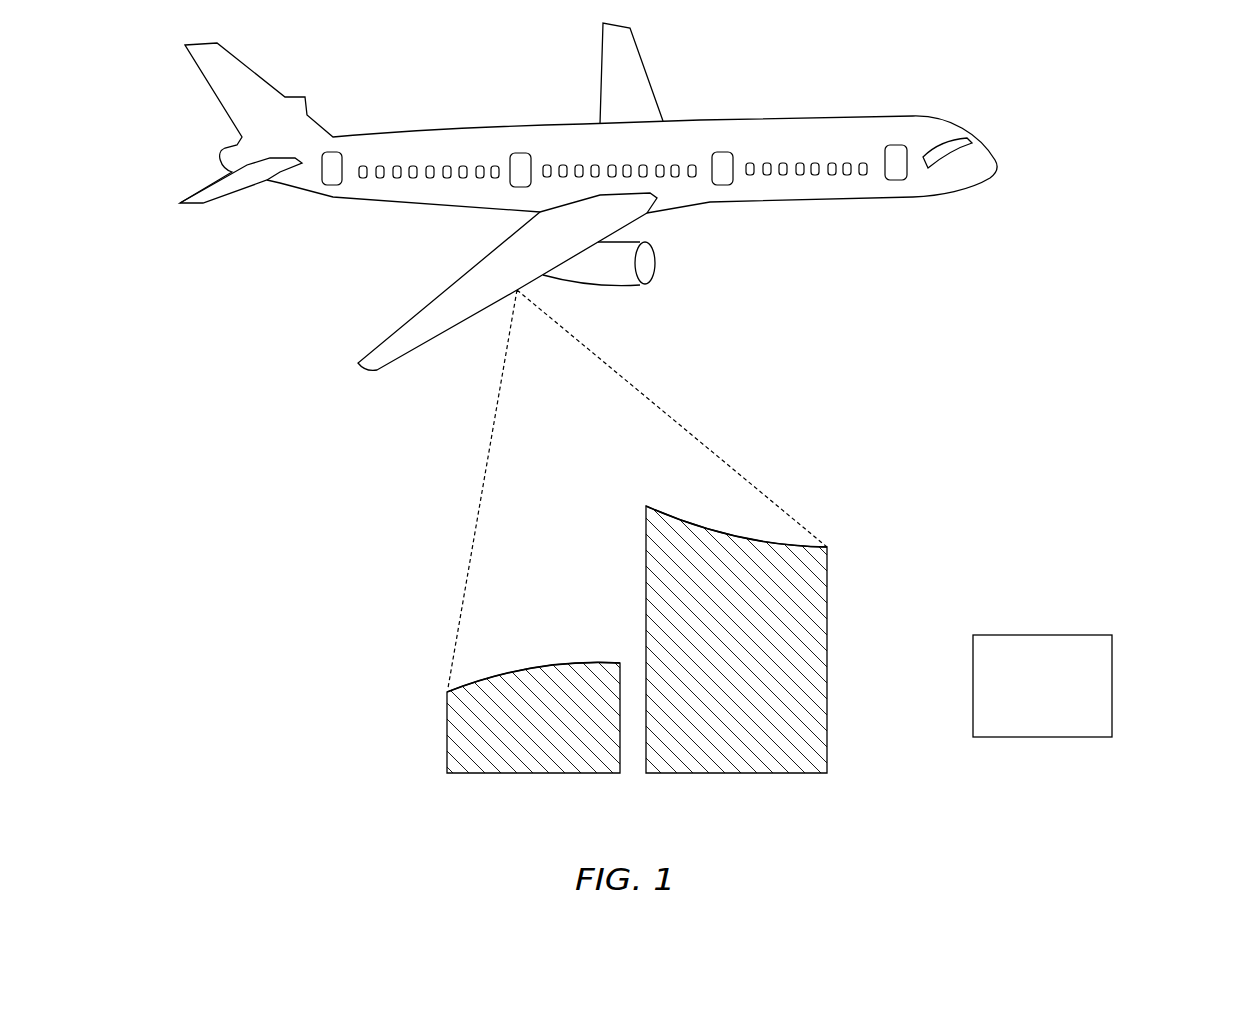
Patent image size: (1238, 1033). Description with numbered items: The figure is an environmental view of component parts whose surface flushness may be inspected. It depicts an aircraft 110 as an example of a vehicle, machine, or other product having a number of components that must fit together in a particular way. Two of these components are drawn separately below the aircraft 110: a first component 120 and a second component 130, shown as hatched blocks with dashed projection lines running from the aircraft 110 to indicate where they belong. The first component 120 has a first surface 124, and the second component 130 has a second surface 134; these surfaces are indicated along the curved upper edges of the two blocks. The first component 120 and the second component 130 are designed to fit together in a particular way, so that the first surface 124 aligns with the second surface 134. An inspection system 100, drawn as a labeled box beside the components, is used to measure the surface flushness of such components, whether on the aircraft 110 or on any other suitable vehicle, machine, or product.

The inspection system 100 is at (1023, 725).
The aircraft 110 is at (963, 117).
The first component 120 is at (520, 762).
The first surface 124 is at (537, 663).
The second component 130 is at (726, 711).
The second surface 134 is at (733, 535).